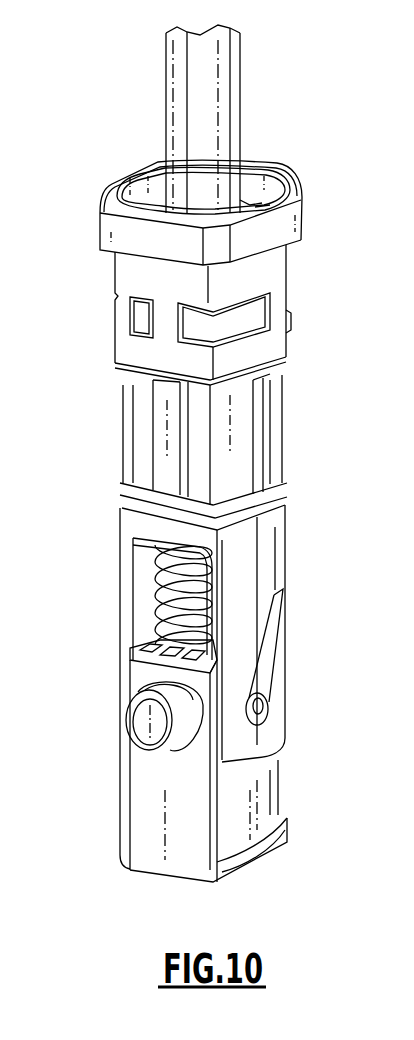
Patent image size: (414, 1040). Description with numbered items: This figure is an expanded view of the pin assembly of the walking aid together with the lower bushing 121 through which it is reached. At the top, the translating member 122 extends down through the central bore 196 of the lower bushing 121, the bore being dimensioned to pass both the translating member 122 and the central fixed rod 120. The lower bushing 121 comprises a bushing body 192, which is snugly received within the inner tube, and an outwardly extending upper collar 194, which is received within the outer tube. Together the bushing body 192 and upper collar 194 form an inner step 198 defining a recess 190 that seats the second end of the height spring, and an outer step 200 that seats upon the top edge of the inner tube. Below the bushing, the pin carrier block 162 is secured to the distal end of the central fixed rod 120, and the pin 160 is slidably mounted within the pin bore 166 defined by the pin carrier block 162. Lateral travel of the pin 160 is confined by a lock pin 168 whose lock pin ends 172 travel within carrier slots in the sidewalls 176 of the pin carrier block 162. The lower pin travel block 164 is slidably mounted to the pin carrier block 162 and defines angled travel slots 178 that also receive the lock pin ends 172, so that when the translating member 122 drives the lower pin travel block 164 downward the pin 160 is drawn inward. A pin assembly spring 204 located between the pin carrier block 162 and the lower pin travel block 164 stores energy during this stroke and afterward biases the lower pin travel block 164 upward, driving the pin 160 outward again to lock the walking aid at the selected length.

The central fixed rod 120 is at (197, 562).
The lower bushing 121 is at (302, 327).
The translating member 122 is at (240, 88).
The pin 160 is at (163, 750).
The pin carrier block 162 is at (296, 775).
The lower pin travel block 164 is at (268, 558).
The pin bore 166 is at (153, 693).
The lock pin 168 is at (262, 678).
The lock pin ends 172 is at (265, 708).
The sidewalls 176 is at (262, 801).
The travel slots 178 is at (282, 643).
The recess 190 is at (136, 171).
The bushing body 192 is at (122, 352).
The upper collar 194 is at (300, 216).
The central bore 196 is at (248, 186).
The inner step 198 is at (263, 200).
The outer step 200 is at (298, 247).
The pin assembly spring 204 is at (173, 607).